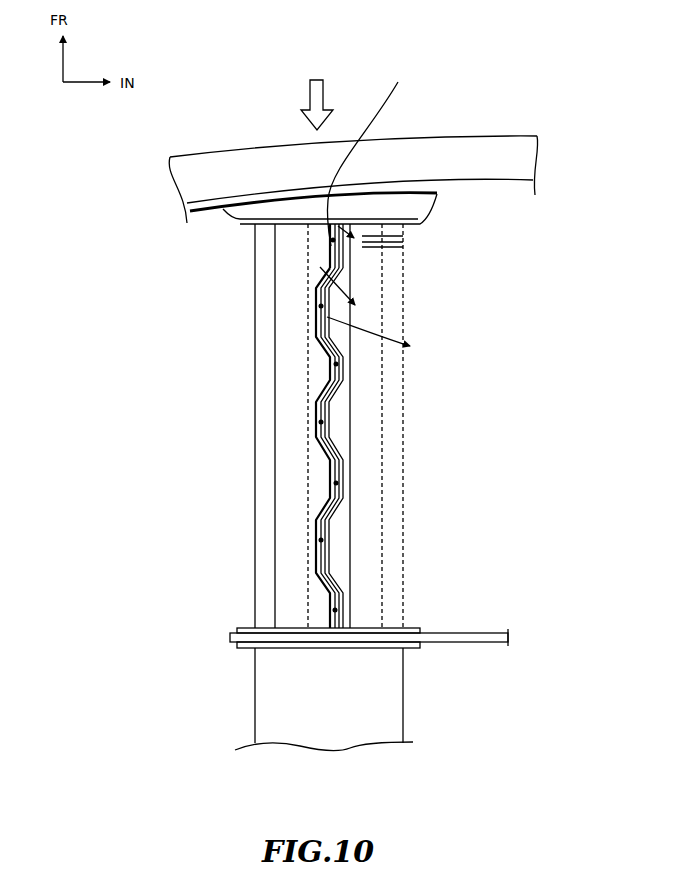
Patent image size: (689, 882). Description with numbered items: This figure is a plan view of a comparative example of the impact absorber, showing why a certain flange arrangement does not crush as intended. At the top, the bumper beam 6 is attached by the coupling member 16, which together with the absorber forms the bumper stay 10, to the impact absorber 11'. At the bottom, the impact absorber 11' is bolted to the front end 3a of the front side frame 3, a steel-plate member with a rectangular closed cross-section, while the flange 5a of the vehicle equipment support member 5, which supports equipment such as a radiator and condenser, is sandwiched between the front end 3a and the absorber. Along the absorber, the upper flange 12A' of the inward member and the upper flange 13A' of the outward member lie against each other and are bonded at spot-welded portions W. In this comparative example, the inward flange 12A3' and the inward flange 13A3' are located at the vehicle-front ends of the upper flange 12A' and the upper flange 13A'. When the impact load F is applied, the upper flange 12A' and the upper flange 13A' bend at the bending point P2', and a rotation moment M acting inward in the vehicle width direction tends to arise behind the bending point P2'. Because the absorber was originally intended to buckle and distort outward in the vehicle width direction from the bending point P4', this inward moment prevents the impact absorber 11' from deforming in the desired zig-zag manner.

The bumper beam 6 is at (413, 147).
The bumper stay 10 is at (363, 209).
The coupling member 16 is at (434, 209).
The impact absorber 11' is at (367, 426).
The upper flange 12A' is at (396, 448).
The inward flange 12A3' is at (408, 251).
The upper flange 13A' is at (259, 448).
The inward flange 13A3' is at (260, 262).
The spot-welded portions W is at (332, 240).
The bending point P2' is at (361, 185).
The bending point P4' is at (230, 296).
The rotation moment M is at (379, 340).
The impact load F is at (323, 105).
The front side frame 3 is at (290, 689).
The front end 3a is at (248, 648).
The vehicle equipment support member 5 is at (376, 618).
The flange 5a is at (482, 634).